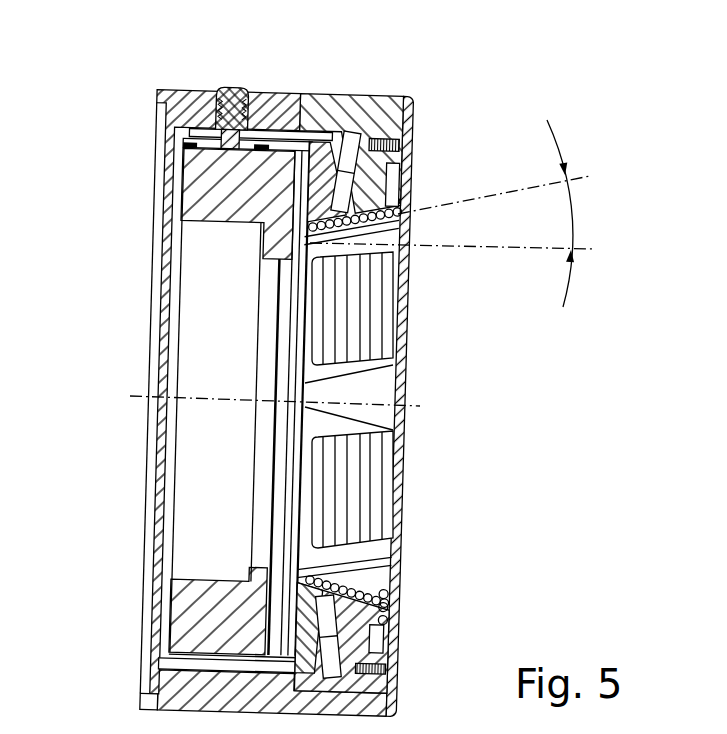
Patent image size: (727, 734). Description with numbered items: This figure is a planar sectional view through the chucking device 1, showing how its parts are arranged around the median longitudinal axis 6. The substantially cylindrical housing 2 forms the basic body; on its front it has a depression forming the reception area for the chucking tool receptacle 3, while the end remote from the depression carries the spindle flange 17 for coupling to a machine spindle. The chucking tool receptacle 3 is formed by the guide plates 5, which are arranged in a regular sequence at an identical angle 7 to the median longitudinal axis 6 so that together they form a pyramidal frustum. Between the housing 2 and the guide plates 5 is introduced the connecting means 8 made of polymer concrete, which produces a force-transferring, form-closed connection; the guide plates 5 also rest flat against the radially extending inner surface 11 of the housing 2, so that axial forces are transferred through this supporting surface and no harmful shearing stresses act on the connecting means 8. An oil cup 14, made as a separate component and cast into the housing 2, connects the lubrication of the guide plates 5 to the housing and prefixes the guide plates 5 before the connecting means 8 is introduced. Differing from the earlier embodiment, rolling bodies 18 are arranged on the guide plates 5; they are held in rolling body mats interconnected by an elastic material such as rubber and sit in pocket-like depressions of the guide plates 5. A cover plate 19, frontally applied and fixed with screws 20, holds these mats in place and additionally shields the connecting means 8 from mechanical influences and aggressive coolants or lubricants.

The chucking device 1 is at (432, 96).
The housing 2 is at (293, 112).
The chucking tool receptacle 3 is at (415, 458).
The guide plates 5 is at (393, 193).
The median longitudinal axis 6 is at (137, 397).
The angle 7 is at (573, 213).
The connecting means 8 is at (393, 650).
The inner surface 11 is at (297, 521).
The oil cup 14 is at (358, 110).
The spindle flange 17 is at (133, 123).
The rolling bodies 18 is at (365, 318).
The cover plate 19 is at (393, 602).
The screws 20 is at (392, 676).